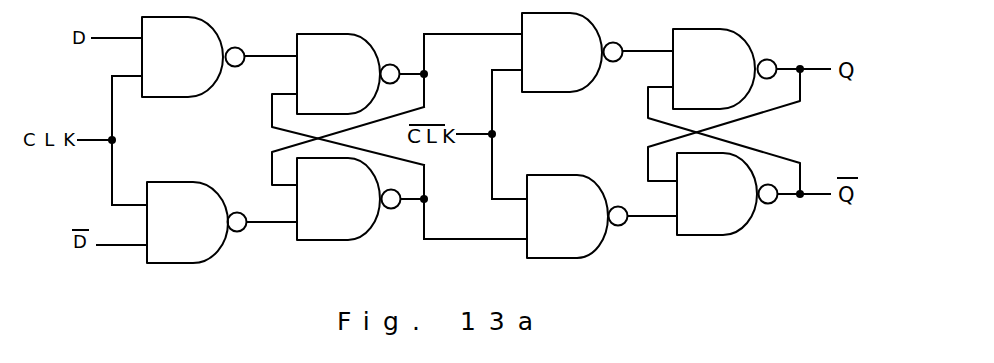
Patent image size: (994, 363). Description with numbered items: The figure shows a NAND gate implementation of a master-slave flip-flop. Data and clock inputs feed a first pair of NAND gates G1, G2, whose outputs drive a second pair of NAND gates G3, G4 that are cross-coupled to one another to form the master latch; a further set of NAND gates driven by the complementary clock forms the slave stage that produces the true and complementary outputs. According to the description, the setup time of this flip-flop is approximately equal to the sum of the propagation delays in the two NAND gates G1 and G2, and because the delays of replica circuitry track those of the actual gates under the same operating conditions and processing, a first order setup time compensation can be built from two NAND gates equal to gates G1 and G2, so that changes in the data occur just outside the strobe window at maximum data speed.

The NAND gate G1 is at (193, 57).
The NAND gate G2 is at (197, 222).
The third NAND gate G3 is at (348, 74).
The fourth NAND gate G4 is at (349, 199).